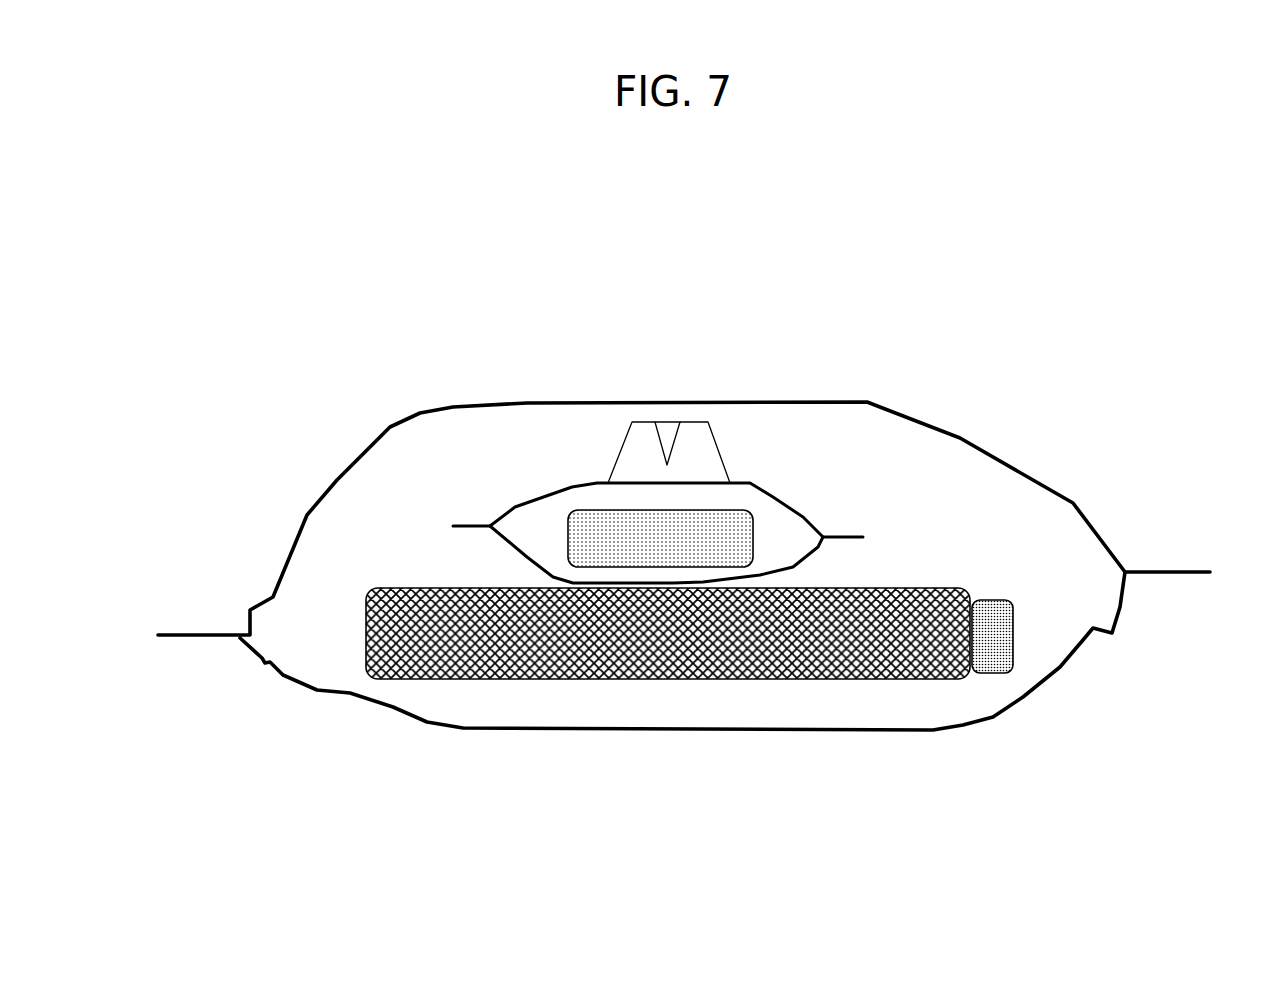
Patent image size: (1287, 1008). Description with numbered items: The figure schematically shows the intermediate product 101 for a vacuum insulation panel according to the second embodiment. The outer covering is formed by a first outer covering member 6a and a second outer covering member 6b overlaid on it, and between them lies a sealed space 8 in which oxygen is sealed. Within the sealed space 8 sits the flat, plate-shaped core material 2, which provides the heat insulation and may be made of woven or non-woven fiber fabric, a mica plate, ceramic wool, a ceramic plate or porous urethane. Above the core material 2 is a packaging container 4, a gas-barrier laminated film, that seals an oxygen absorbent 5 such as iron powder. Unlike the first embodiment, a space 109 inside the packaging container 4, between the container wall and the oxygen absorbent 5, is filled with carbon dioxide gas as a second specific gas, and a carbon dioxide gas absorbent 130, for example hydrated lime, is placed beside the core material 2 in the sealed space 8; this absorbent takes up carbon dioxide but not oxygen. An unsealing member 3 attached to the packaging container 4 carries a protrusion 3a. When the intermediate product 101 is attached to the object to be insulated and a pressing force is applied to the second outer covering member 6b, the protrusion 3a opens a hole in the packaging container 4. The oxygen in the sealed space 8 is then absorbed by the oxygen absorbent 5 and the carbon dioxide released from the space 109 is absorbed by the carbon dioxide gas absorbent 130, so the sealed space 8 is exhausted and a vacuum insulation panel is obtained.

The intermediate product for a vacuum insulation panel 101 is at (627, 294).
The sealed space 8 is at (827, 423).
The second outer covering member 6b is at (412, 417).
The first outer covering member 6a is at (475, 731).
The core material 2 is at (400, 585).
The carbon dioxide gas absorbent 130 is at (1003, 600).
The packaging container 4 is at (510, 506).
The space in the container 109 is at (793, 525).
The oxygen absorbent 5 is at (577, 510).
The unsealing member 3 is at (720, 447).
The protrusion 3a is at (660, 443).